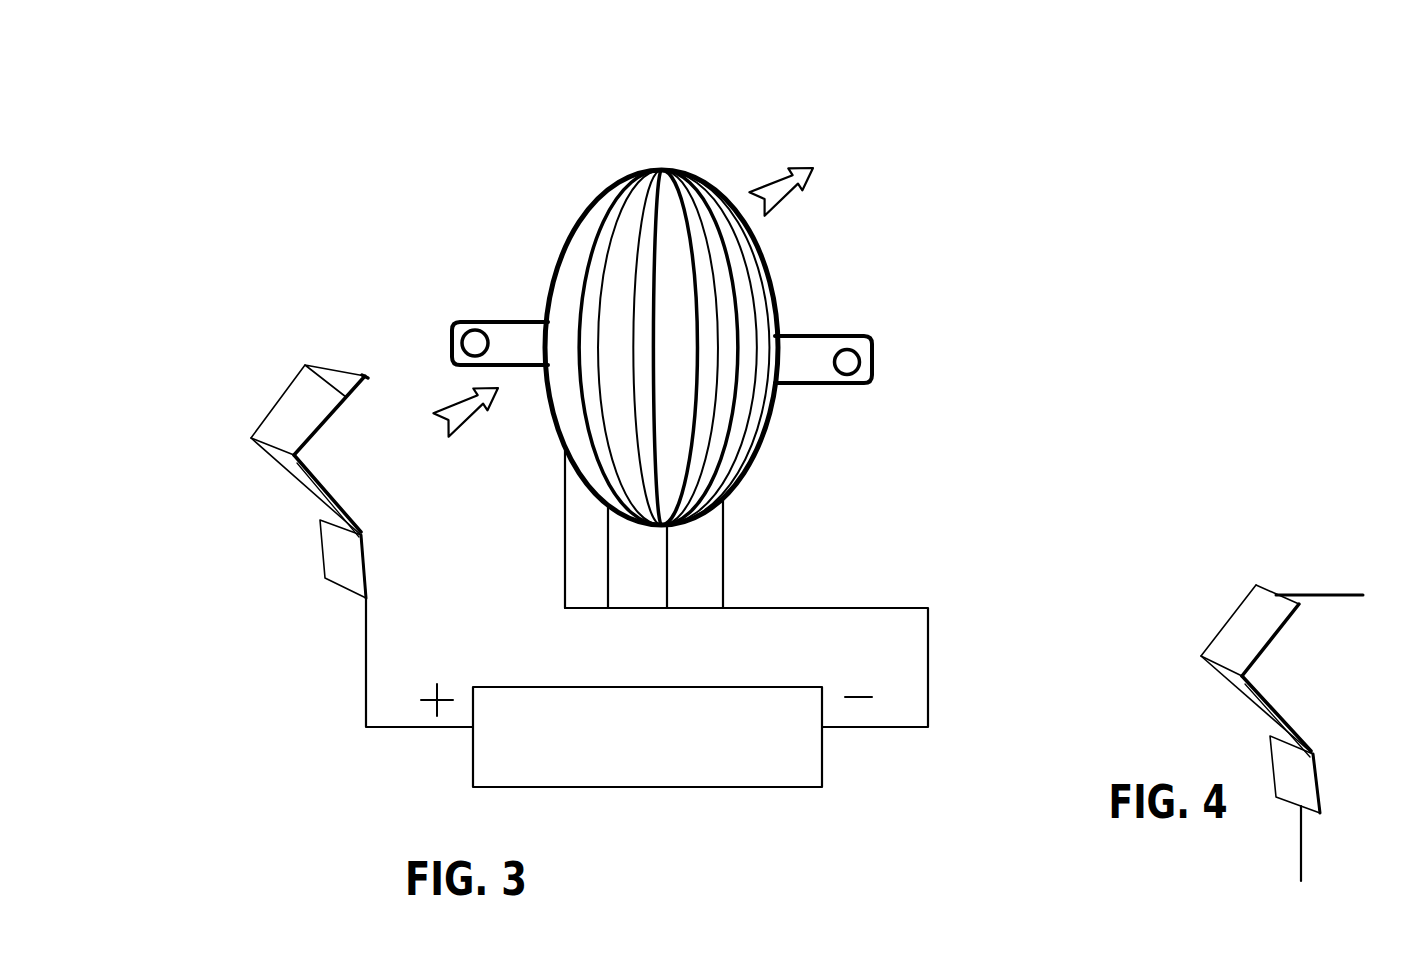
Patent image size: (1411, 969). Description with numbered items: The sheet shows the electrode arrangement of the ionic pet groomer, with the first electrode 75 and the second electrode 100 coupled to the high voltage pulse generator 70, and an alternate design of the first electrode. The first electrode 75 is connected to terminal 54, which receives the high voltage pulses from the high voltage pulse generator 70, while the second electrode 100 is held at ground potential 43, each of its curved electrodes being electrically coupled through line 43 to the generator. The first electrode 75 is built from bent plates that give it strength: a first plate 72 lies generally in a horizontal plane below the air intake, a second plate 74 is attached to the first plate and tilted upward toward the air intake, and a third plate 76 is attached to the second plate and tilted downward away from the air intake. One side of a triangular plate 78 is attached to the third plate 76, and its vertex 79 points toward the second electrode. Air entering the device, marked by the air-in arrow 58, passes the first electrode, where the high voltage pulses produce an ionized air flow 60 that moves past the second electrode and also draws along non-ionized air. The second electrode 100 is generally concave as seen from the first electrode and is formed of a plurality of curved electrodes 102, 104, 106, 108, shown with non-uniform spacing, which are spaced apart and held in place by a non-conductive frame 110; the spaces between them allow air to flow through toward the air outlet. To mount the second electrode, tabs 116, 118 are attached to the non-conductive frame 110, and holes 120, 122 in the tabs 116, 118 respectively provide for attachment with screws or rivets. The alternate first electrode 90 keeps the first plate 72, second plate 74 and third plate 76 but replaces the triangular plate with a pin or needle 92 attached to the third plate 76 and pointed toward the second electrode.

In FIG. 3, the ground potential line 43 is at (930, 658).
In FIG. 3, the terminal 54 is at (368, 675).
In FIG. 4, the terminal 54 is at (1302, 852).
In FIG. 3, the air inlet 58 is at (385, 451).
In FIG. 3, the ionized air flow 60 is at (980, 155).
In FIG. 3, the high voltage pulse generator 70 is at (810, 770).
In FIG. 3, the first plate 72 is at (333, 572).
In FIG. 4, the first plate 72 is at (1288, 792).
In FIG. 3, the second plate 74 is at (295, 479).
In FIG. 4, the second plate 74 is at (1244, 694).
In FIG. 3, the first electrode 75 is at (286, 478).
In FIG. 3, the third plate 76 is at (305, 408).
In FIG. 4, the third plate 76 is at (1260, 615).
In FIG. 3, the triangular plate 78 is at (335, 362).
In FIG. 3, the vertex 79 is at (366, 377).
In FIG. 4, the electrode 90 is at (1239, 668).
In FIG. 4, the pin or needle 92 is at (1315, 595).
In FIG. 3, the second electrode 100 is at (772, 339).
In FIG. 3, the curved electrode 102 is at (590, 338).
In FIG. 3, the curved electrode 104 is at (642, 357).
In FIG. 3, the curved electrode 106 is at (688, 453).
In FIG. 3, the curved electrode 108 is at (725, 475).
In FIG. 3, the non-conductive frame 110 is at (598, 213).
In FIG. 3, the tab 116 is at (873, 350).
In FIG. 3, the tab 118 is at (532, 335).
In FIG. 3, the hole 120 is at (848, 362).
In FIG. 3, the hole 122 is at (477, 340).